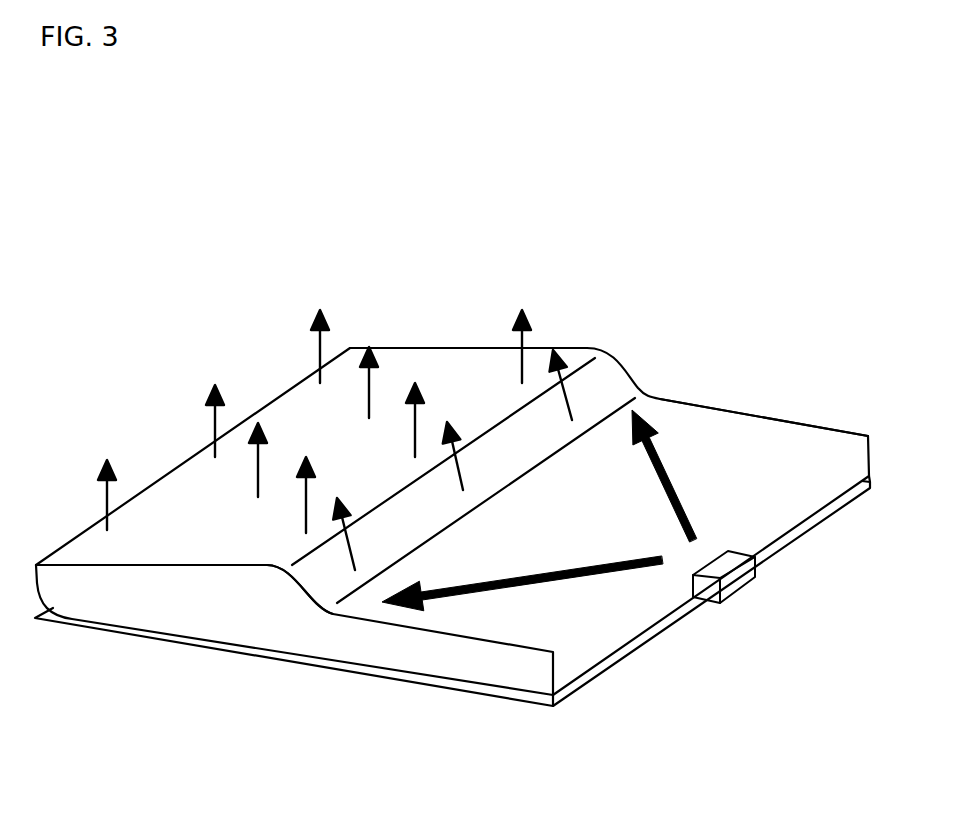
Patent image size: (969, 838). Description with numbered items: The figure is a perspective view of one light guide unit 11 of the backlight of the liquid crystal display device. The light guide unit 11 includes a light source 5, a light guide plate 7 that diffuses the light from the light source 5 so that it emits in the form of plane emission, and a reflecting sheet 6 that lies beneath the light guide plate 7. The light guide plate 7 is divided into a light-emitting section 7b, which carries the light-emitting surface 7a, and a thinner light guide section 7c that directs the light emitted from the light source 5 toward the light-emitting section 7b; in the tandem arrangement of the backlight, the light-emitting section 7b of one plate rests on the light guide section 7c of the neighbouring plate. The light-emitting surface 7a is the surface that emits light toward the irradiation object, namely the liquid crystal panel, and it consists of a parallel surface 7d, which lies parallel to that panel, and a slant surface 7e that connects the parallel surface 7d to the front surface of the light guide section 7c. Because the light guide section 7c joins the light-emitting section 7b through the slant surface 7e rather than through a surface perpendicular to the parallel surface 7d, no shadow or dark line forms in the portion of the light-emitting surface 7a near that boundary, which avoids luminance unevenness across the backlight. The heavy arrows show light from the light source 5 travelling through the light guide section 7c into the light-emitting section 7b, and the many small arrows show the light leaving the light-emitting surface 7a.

The light source 5 is at (735, 585).
The reflecting sheet 6 is at (107, 633).
The light guide plate 7 is at (600, 658).
The light-emitting surface 7a is at (328, 717).
The light-emitting section 7b is at (627, 283).
The light guide section 7c is at (761, 401).
The parallel surface 7d is at (240, 547).
The slant surface 7e is at (325, 580).
The light guide unit 11 is at (755, 228).